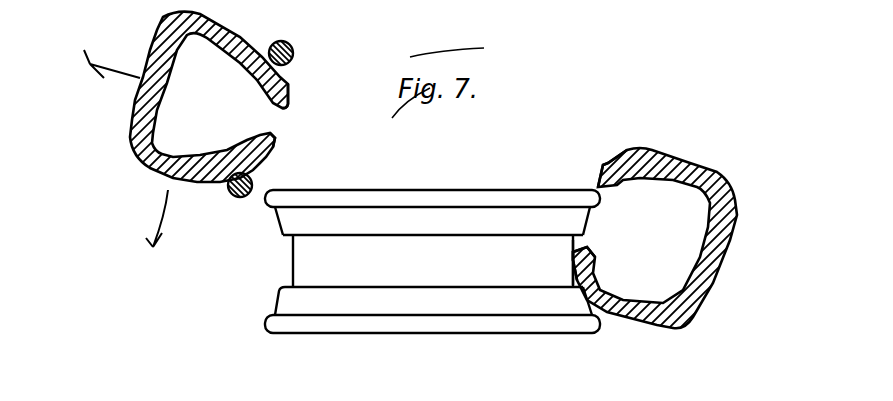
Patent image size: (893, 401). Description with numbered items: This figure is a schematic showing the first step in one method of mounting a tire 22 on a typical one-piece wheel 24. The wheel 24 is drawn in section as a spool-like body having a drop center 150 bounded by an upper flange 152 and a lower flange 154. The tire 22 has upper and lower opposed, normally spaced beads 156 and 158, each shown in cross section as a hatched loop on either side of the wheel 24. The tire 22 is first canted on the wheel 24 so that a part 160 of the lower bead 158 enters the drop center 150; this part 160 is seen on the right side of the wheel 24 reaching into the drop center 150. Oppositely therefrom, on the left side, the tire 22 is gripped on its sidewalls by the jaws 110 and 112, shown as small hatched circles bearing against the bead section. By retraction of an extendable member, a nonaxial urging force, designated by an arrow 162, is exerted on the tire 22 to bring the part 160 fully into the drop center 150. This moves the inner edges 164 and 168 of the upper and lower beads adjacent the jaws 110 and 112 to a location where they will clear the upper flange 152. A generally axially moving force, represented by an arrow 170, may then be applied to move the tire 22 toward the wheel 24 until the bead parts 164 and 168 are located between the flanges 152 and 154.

The tire 22 is at (715, 258).
The one-piece wheel 24 is at (478, 305).
The jaw 110 is at (289, 44).
The jaw 112 is at (237, 198).
The drop center 150 is at (292, 267).
The upper flange 152 is at (503, 200).
The lower flange 154 is at (547, 322).
The upper bead 156 is at (600, 176).
The lower bead 158 is at (572, 265).
The part of the lower bead 160 is at (588, 256).
The arrow 162 is at (140, 78).
The inner edge of the upper bead 164 is at (289, 97).
The inner edge of the lower bead 168 is at (268, 151).
The arrow 170 is at (153, 211).